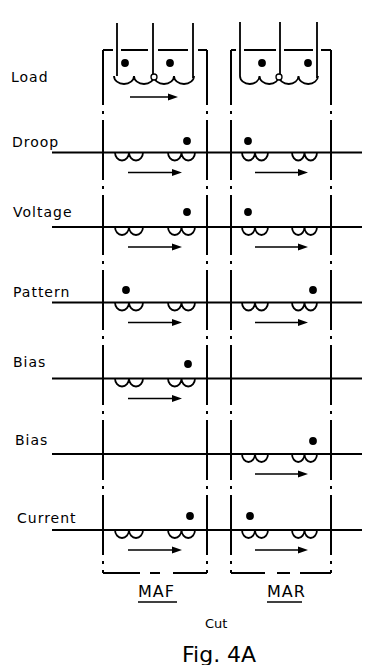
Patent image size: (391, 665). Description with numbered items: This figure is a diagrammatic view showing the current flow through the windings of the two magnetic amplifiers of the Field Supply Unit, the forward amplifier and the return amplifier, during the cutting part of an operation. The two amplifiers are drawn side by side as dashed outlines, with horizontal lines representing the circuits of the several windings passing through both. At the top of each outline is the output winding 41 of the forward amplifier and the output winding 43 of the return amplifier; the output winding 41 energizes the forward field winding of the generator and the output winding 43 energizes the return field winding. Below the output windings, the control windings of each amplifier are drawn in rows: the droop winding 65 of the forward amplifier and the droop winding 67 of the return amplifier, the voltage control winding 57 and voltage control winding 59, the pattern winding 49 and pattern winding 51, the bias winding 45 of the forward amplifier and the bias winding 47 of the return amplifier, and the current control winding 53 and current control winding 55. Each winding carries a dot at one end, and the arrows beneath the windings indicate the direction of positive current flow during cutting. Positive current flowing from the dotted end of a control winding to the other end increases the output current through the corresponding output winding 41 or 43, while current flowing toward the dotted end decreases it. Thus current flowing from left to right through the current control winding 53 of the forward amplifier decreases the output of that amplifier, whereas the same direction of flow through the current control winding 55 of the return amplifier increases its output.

The output winding 41 is at (123, 87).
The output winding 43 is at (267, 85).
The droop winding 65 is at (172, 152).
The droop winding 67 is at (261, 151).
The voltage control winding 57 is at (137, 226).
The voltage control winding 59 is at (262, 223).
The pattern winding 49 is at (175, 299).
The pattern winding 51 is at (252, 301).
The bias winding 45 is at (137, 376).
The bias winding 47 is at (263, 453).
The current control winding 53 is at (139, 528).
The current control winding 55 is at (300, 527).